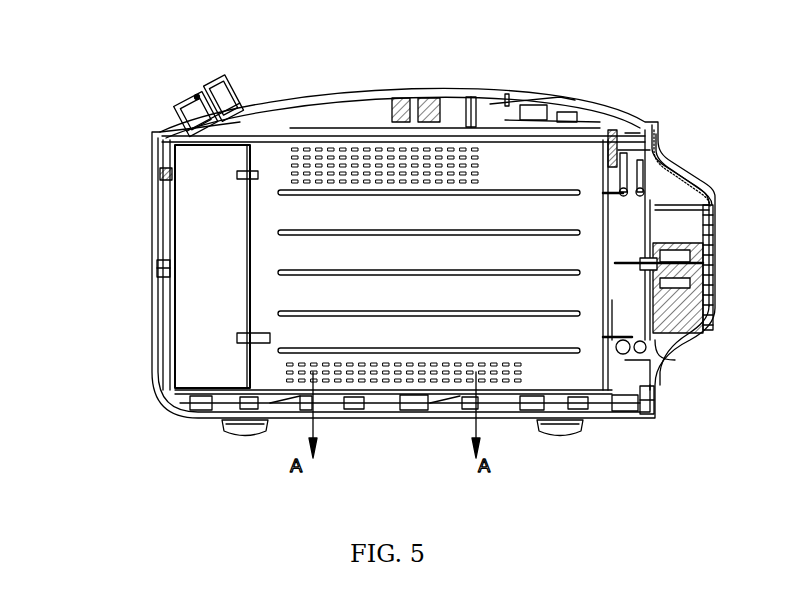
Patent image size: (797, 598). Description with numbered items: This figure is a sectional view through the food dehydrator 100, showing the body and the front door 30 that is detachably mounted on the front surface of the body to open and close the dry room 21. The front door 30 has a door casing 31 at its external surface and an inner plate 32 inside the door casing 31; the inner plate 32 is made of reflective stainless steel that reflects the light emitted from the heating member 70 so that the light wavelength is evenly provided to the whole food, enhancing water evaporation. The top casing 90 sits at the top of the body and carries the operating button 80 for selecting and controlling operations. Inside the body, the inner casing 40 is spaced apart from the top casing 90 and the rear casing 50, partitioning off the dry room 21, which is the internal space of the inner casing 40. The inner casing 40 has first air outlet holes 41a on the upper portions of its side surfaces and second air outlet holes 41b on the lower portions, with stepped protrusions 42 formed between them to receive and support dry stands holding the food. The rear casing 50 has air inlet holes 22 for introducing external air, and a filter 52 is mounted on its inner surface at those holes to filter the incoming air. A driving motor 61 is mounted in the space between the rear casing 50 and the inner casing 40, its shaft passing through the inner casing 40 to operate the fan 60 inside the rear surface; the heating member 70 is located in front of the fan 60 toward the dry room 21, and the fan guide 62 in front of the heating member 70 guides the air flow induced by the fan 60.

The food dehydrator 100 is at (692, 125).
The dry room 21 is at (445, 323).
The air inlet holes 22 is at (722, 205).
The front door 30 is at (55, 188).
The door casing 31 is at (152, 190).
The inner plate 32 is at (188, 236).
The inner casing 40 is at (688, 190).
The first air outlet holes 41a is at (354, 152).
The second air outlet holes 41b is at (363, 387).
The stepped protrusions 42 is at (418, 275).
The rear casing 50 is at (706, 200).
The filter 52 is at (713, 283).
The fan 60 is at (718, 220).
The driving motor 61 is at (688, 300).
The fan guide 62 is at (654, 388).
The heating member 70 is at (627, 306).
The operating button 80 is at (197, 97).
The top casing 90 is at (568, 100).